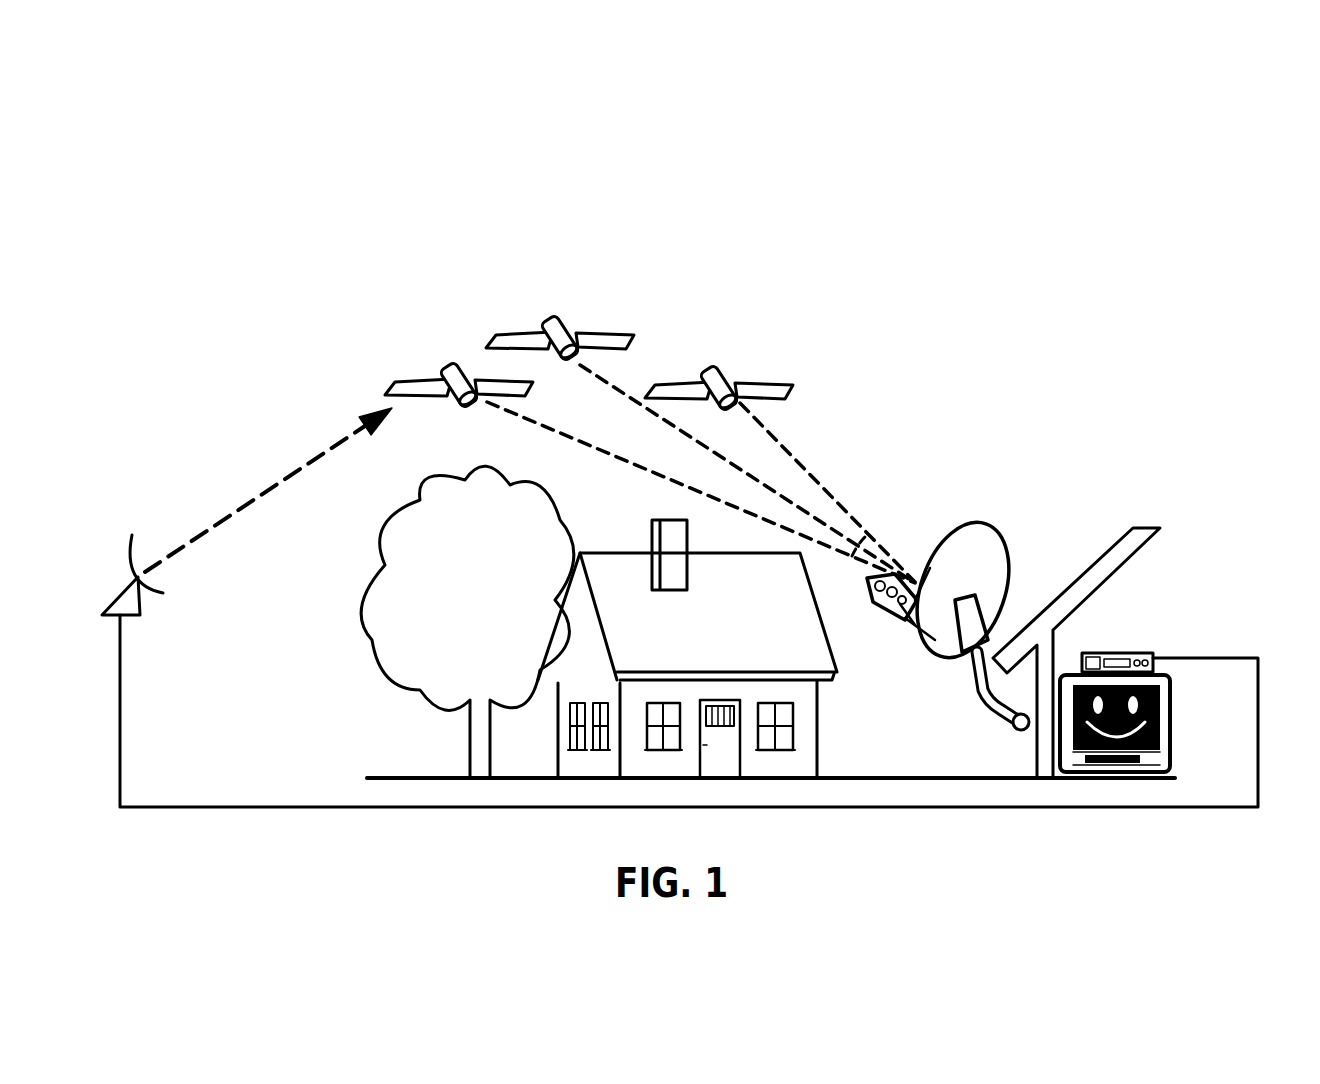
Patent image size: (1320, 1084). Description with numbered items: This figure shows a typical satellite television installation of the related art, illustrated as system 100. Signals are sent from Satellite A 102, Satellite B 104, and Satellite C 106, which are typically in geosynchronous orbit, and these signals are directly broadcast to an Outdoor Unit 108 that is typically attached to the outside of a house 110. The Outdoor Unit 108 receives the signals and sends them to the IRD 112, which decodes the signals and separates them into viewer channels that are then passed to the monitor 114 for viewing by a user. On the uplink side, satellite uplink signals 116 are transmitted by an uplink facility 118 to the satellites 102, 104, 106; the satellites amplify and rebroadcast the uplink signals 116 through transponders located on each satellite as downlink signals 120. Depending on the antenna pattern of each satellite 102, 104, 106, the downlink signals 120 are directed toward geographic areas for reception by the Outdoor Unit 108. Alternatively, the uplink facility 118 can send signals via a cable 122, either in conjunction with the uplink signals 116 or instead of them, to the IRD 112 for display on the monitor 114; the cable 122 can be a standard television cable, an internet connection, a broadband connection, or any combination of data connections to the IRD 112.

The system 100 is at (678, 163).
The Satellite A 102 is at (456, 358).
The Satellite B 104 is at (737, 363).
The Satellite C 106 is at (606, 327).
The outdoor unit 108 is at (972, 517).
The house 110 is at (1103, 552).
The IRD 112 is at (1117, 652).
The monitor 114 is at (1172, 710).
The satellite uplink signals 116 is at (268, 485).
The uplink facility 118 is at (122, 595).
The downlink signals 120 is at (854, 501).
The cable 122 is at (1193, 658).